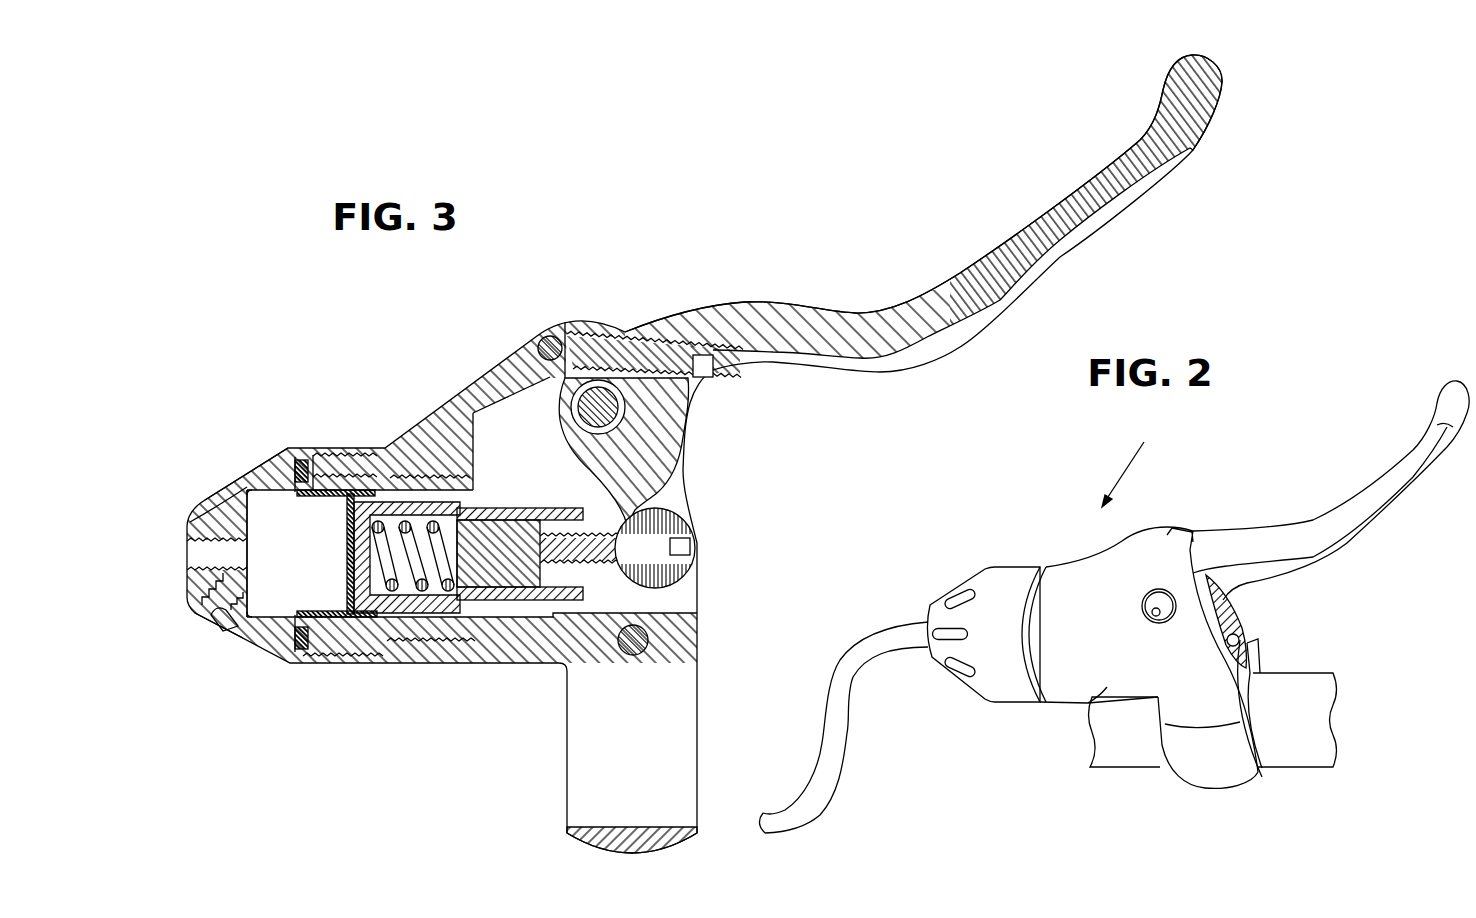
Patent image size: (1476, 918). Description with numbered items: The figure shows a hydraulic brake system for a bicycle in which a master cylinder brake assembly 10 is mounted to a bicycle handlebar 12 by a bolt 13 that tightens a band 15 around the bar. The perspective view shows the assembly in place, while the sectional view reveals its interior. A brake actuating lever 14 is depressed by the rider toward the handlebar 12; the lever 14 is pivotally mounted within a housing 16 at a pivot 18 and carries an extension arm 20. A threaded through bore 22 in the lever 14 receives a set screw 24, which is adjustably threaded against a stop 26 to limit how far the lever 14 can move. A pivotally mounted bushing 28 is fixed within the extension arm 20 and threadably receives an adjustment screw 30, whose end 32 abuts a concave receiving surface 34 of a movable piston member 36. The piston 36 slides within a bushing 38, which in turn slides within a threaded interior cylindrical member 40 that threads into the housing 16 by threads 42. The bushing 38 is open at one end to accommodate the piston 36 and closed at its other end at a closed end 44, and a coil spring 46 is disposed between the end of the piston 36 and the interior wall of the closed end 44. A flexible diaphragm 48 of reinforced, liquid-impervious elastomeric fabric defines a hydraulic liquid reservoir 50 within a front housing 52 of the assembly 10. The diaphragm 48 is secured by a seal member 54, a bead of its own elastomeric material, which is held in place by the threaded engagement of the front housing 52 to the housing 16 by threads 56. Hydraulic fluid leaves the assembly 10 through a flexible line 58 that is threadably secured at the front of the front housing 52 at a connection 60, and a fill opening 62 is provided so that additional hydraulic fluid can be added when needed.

In FIG. 2, the master cylinder brake assembly 10 is at (1137, 460).
In FIG. 2, the bicycle handlebar 12 is at (1298, 672).
In FIG. 3, the bolt 13 is at (648, 640).
In FIG. 3, the brake actuating lever 14 is at (802, 305).
In FIG. 2, the brake actuating lever 14 is at (1303, 522).
In FIG. 3, the band 15 is at (663, 846).
In FIG. 2, the band 15 is at (1208, 780).
In FIG. 3, the housing 16 is at (512, 353).
In FIG. 2, the housing 16 is at (1140, 546).
In FIG. 3, the pivot 18 is at (618, 412).
In FIG. 2, the pivot 18 is at (1163, 600).
In FIG. 3, the extension arm 20 is at (670, 517).
In FIG. 3, the threaded through bore 22 is at (597, 327).
In FIG. 3, the set screw 24 is at (712, 372).
In FIG. 3, the stop 26 is at (562, 330).
In FIG. 3, the pivotally mounted bushing 28 is at (672, 573).
In FIG. 3, the adjustment screw 30 is at (692, 548).
In FIG. 3, the end of adjustment screw 32 is at (525, 556).
In FIG. 3, the concave receiving surface 34 is at (567, 566).
In FIG. 3, the movable piston member 36 is at (500, 547).
In FIG. 3, the bushing 38 is at (486, 503).
In FIG. 3, the threaded interior cylindrical member 40 is at (408, 480).
In FIG. 3, the threads 42 is at (413, 634).
In FIG. 3, the closed end 44 is at (349, 614).
In FIG. 3, the coil spring 46 is at (427, 592).
In FIG. 3, the flexible diaphragm 48 is at (315, 496).
In FIG. 3, the hydraulic liquid reservoir 50 is at (318, 603).
In FIG. 3, the front housing 52 is at (250, 480).
In FIG. 2, the front housing 52 is at (998, 573).
In FIG. 3, the seal member 54 is at (306, 650).
In FIG. 3, the threads 56 is at (342, 468).
In FIG. 2, the flexible line 58 is at (857, 637).
In FIG. 3, the line connection 60 is at (193, 558).
In FIG. 3, the fill opening 62 is at (210, 608).